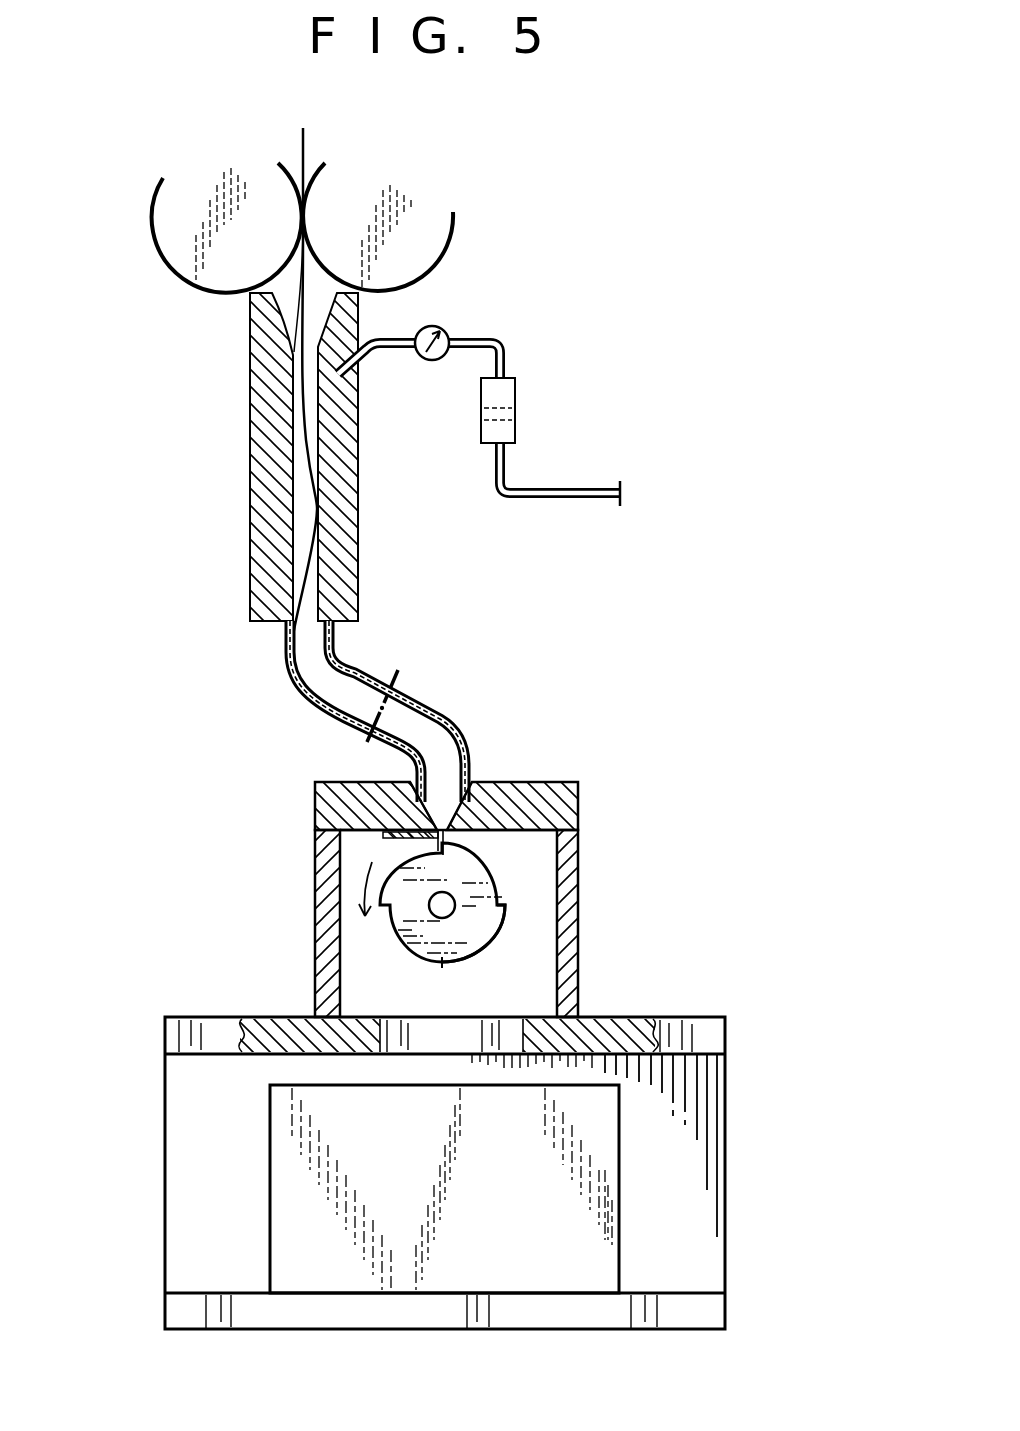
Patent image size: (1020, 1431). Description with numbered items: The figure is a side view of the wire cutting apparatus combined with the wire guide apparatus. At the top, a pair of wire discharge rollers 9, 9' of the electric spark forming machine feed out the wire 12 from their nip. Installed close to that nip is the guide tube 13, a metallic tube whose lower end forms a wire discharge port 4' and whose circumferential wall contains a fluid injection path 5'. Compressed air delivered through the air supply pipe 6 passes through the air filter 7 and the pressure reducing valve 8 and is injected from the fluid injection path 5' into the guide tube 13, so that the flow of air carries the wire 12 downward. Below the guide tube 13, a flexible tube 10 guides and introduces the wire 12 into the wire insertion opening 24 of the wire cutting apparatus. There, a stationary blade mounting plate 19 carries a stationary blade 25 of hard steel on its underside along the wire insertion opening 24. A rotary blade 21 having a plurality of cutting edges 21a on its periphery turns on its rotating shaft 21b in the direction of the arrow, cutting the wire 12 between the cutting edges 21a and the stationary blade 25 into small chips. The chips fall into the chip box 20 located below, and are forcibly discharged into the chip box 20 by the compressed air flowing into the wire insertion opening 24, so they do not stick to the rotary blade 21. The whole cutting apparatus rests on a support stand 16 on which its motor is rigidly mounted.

The wire discharge roller 9 is at (172, 250).
The wire discharge roller 9' is at (430, 227).
The wire 12 is at (292, 302).
The guide tube 13 is at (235, 450).
The fluid injection path 5' is at (376, 457).
The pressure reducing valve 8 is at (442, 325).
The air filter 7 is at (518, 405).
The air supply pipe 6 is at (548, 498).
The wire discharge port 4' is at (397, 706).
The flexible tube 10 is at (440, 830).
The wire insertion opening 24 is at (468, 766).
The stationary blade mounting plate 19 is at (313, 800).
The stationary blade 25 is at (383, 835).
The rotary blade 21 is at (490, 865).
The cutting edges 21a is at (504, 908).
The rotating shaft 21b is at (440, 910).
The support stand 16 is at (683, 1015).
The chip box 20 is at (619, 1152).